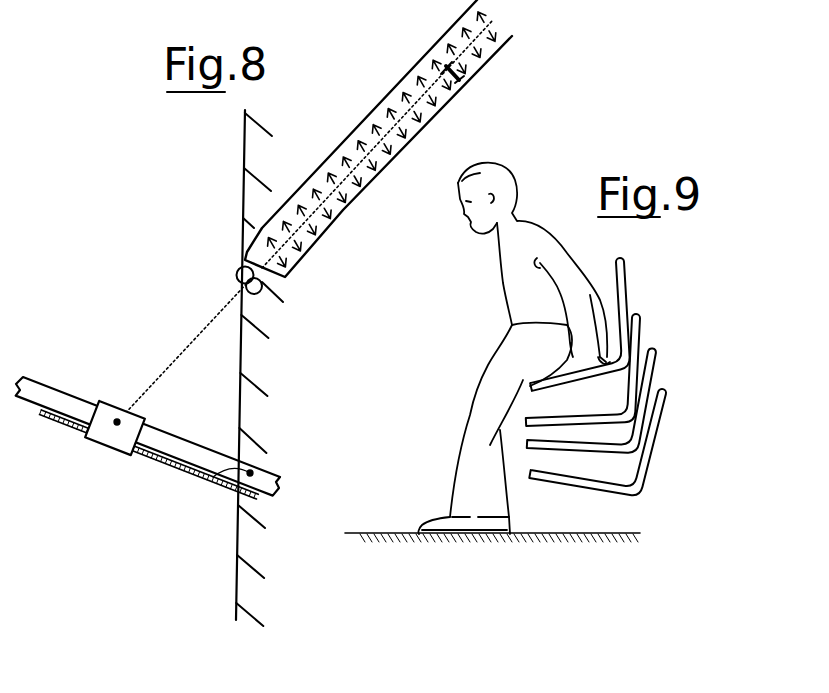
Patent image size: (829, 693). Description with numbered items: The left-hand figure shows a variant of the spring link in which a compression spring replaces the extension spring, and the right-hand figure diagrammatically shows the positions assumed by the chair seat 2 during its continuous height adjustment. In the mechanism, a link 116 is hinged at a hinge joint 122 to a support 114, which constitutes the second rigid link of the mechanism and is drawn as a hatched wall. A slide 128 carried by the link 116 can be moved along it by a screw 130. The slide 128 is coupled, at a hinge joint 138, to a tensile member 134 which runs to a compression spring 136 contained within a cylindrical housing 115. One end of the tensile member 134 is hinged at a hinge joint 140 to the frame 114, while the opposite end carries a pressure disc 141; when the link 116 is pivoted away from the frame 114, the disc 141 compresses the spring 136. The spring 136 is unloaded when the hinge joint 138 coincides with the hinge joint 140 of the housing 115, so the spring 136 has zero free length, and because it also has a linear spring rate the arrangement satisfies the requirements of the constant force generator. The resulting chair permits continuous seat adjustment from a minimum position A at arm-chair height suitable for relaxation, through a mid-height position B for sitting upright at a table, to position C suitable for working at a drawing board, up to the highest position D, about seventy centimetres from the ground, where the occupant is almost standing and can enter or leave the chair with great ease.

In FIG. 8, the support 114 is at (245, 153).
In FIG. 8, the cylindrical housing 115 is at (385, 98).
In FIG. 8, the compression spring 136 is at (362, 128).
In FIG. 8, the pressure disc 141 is at (441, 62).
In FIG. 8, the hinge joint 140 is at (236, 273).
In FIG. 8, the tensile member 134 is at (175, 355).
In FIG. 8, the link 116 is at (38, 379).
In FIG. 8, the screw 130 is at (70, 427).
In FIG. 8, the slide 128 is at (115, 407).
In FIG. 8, the hinge joint 138 is at (120, 421).
In FIG. 8, the hinge joint 122 is at (212, 479).
In FIG. 9, the seat 2 is at (614, 384).
In FIG. 9, the position A is at (664, 446).
In FIG. 9, the position B is at (660, 380).
In FIG. 9, the position C is at (648, 330).
In FIG. 9, the position D is at (635, 284).